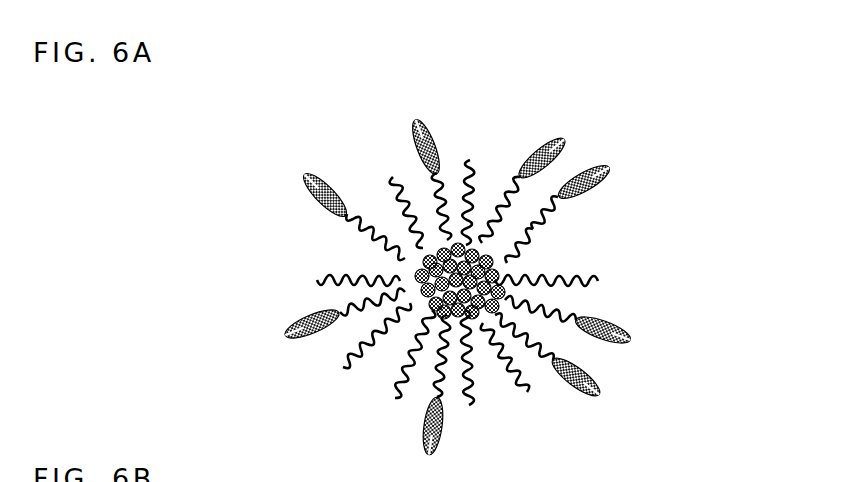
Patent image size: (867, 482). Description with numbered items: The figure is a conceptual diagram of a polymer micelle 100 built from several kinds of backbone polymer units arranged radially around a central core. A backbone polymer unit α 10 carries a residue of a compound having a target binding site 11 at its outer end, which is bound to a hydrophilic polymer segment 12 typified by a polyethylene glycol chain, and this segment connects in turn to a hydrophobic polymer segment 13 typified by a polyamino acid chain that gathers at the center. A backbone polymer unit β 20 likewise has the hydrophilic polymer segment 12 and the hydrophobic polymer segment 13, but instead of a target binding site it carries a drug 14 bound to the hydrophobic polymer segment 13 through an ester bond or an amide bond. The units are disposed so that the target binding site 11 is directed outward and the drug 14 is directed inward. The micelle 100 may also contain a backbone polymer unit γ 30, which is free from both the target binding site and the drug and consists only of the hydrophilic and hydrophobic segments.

The polymer micelle 100 is at (257, 156).
The backbone polymer unit α 10 is at (611, 166).
The target binding site 11 is at (600, 194).
The hydrophilic polymer segment 12 is at (542, 228).
The hydrophobic polymer segment 13 is at (508, 263).
The drug 14 is at (420, 255).
The backbone polymer unit β 20 is at (600, 282).
The backbone polymer unit γ 30 is at (391, 401).